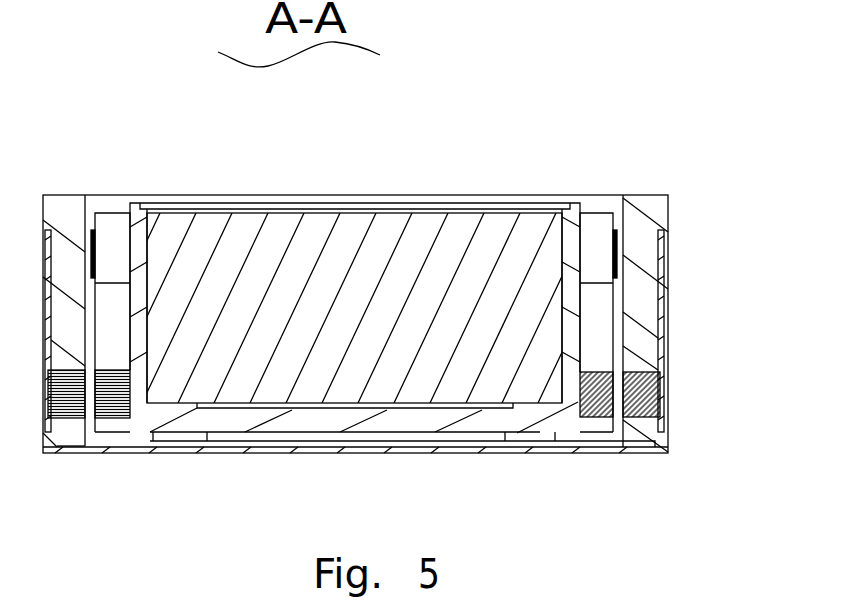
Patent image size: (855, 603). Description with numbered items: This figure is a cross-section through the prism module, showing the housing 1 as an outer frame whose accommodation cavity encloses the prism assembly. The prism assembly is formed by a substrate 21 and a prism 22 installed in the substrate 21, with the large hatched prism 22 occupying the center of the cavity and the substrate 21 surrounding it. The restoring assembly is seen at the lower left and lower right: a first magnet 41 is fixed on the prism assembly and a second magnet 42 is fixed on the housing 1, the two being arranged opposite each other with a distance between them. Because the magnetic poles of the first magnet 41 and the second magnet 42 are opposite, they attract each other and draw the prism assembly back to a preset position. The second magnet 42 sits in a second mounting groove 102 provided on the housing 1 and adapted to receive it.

The housing 1 is at (660, 210).
The substrate 21 is at (573, 260).
The prism 22 is at (487, 240).
The first magnet 41 is at (598, 400).
The second magnet 42 is at (662, 400).
The second mounting groove 102 is at (658, 365).